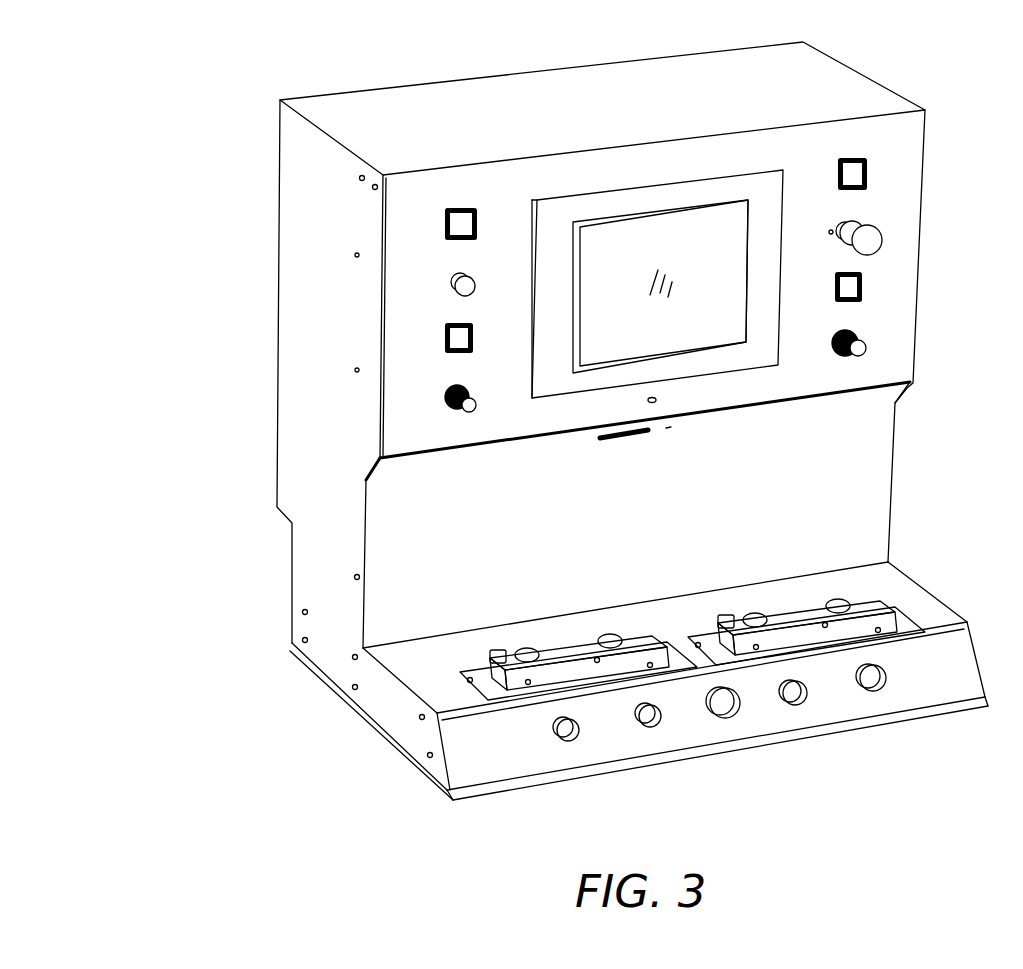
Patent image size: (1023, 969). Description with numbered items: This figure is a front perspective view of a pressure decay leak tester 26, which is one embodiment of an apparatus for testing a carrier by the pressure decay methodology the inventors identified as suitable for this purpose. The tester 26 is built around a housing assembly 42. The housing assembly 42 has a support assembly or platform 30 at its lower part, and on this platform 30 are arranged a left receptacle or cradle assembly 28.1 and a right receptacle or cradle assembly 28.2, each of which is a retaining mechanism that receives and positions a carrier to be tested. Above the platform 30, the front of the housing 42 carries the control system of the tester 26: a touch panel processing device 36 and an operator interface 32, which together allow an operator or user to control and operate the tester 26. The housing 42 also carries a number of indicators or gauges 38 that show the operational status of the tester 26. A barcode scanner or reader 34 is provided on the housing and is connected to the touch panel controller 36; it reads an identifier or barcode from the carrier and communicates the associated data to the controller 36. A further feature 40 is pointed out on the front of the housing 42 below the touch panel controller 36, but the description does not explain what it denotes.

The pressure decay leak tester 26 is at (570, 435).
The left receptacle or cradle assembly 28.1 is at (560, 678).
The right receptacle or cradle assembly 28.2 is at (890, 600).
The support assembly or platform 30 is at (425, 680).
The operator interface 32 is at (830, 708).
The barcode scanner or reader 34 is at (650, 437).
The touch panel processing device 36 is at (552, 313).
The indicators or gauges 38 is at (862, 285).
The indicator 40 is at (660, 398).
The housing assembly 42 is at (402, 193).